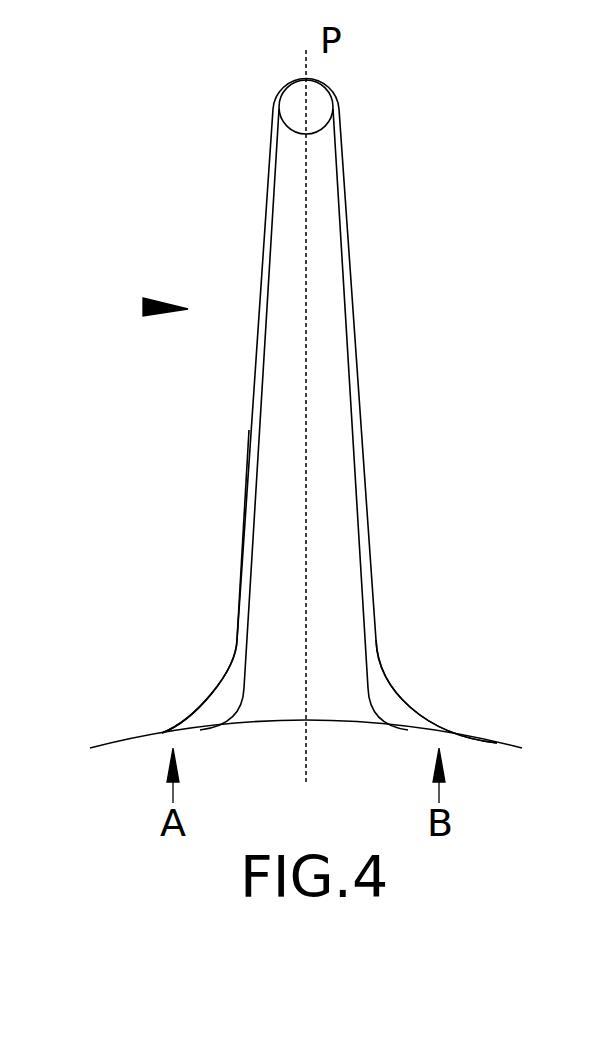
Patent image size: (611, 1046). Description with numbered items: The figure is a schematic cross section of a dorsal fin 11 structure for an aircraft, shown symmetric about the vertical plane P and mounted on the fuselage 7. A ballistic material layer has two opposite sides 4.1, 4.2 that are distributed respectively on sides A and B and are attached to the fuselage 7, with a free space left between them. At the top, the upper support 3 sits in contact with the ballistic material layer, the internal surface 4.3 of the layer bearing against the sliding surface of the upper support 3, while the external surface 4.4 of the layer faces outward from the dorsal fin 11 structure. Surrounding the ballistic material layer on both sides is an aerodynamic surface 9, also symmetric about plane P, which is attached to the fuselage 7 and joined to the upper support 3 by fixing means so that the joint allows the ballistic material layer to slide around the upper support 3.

The upper support 3 is at (318, 107).
The first opposite side of the ballistic material layer 4.1 is at (255, 492).
The second opposite side of the ballistic material layer 4.2 is at (365, 500).
The internal surface of the ballistic material layer 4.3 is at (270, 293).
The external surface of the ballistic material layer 4.4 is at (238, 700).
The fuselage 7 is at (500, 743).
The aerodynamic surface 9 is at (250, 432).
The dorsal fin structure 11 is at (142, 306).